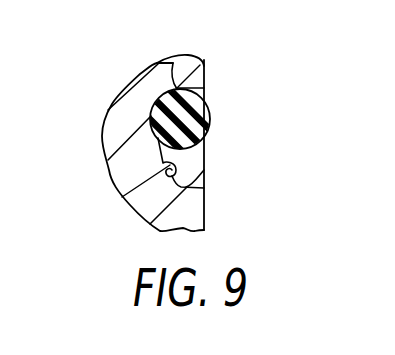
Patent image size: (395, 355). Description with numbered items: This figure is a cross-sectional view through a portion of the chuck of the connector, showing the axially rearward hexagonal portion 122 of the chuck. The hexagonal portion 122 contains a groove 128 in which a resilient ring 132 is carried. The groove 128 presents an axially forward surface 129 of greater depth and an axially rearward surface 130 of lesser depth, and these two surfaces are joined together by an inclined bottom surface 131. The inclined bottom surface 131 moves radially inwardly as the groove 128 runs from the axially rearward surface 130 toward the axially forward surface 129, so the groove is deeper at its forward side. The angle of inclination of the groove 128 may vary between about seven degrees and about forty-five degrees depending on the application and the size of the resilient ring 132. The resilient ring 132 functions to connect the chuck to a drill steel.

The axially rearward hexagonal portion 122 is at (204, 67).
The groove 128 is at (180, 155).
The axially forward surface 129 is at (173, 63).
The axially rearward surface 130 is at (204, 170).
The inclined bottom surface 131 is at (163, 165).
The resilient ring 132 is at (196, 127).